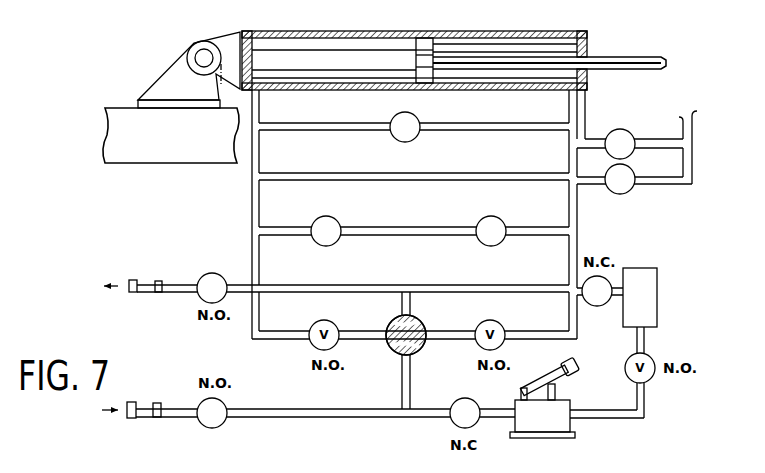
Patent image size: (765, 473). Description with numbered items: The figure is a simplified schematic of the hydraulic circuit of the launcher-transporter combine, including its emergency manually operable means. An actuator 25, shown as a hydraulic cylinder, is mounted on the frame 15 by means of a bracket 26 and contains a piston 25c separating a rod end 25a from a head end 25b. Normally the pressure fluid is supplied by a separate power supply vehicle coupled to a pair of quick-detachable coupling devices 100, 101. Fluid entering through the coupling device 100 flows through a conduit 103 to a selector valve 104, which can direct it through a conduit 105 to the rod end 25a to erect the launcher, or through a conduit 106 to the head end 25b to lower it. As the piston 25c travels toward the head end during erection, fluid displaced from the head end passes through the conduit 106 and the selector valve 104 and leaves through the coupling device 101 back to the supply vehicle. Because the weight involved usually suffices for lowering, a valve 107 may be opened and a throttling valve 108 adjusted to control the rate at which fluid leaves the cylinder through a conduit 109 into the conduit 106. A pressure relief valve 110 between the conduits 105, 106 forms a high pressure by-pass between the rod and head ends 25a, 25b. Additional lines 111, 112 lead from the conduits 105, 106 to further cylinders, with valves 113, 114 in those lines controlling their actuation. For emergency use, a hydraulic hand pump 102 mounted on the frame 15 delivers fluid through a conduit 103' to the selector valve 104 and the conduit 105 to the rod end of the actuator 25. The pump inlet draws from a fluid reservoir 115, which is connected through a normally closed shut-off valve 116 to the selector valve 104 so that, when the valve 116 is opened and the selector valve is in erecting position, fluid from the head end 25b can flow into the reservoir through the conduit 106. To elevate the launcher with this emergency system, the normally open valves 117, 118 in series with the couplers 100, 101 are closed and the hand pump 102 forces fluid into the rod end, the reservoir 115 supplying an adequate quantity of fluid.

The actuator 25 is at (594, 42).
The rod end 25a is at (507, 44).
The head end 25b is at (310, 45).
The piston 25c is at (427, 44).
The bracket 26 is at (151, 98).
The frame 15 is at (164, 155).
The quick-detachable coupling device 100 is at (165, 381).
The quick-detachable coupling device 101 is at (161, 262).
The hydraulic hand pump 102 is at (566, 432).
The conduit 103 is at (325, 428).
The conduit 103' is at (436, 422).
The selector valve 104 is at (421, 321).
The conduit 105 is at (580, 240).
The conduit 106 is at (257, 198).
The valve 107 is at (498, 220).
The throttling valve 108 is at (314, 220).
The conduit 109 is at (381, 226).
The pressure relief valve 110 is at (411, 143).
The line 111 is at (582, 138).
The line 112 is at (588, 180).
The valve 113 is at (625, 129).
The valve 114 is at (631, 187).
The fluid reservoir 115 is at (657, 292).
The normally closed shut-off valve 116 is at (592, 306).
The normally open valve 117 is at (222, 427).
The normally open valve 118 is at (231, 254).